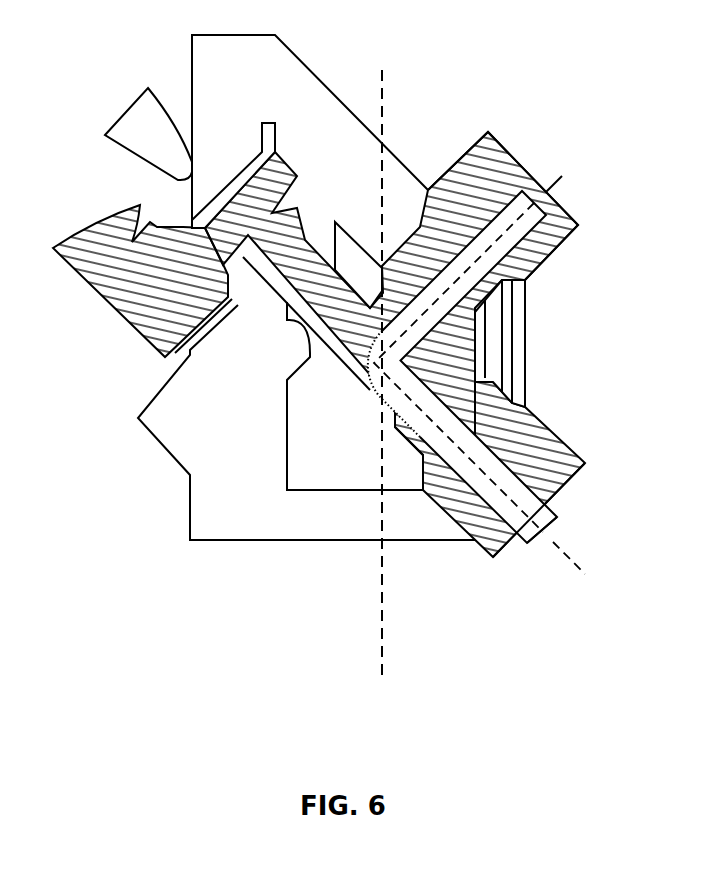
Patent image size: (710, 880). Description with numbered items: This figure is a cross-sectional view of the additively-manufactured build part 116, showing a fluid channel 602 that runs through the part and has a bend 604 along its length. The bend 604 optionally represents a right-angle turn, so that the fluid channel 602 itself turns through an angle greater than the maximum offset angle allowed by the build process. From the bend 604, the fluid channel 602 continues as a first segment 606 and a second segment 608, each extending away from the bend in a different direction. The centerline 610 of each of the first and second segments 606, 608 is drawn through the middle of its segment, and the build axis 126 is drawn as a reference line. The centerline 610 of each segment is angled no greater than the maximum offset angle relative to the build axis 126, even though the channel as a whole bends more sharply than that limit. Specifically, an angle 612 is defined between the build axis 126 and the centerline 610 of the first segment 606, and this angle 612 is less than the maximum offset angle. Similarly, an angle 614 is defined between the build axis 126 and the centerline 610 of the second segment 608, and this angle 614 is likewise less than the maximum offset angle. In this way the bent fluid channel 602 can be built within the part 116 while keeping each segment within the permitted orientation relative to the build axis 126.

The additively-manufactured build part 116 is at (288, 63).
The bend 604 is at (368, 362).
The second segment 608 is at (527, 277).
The fluid channel 602 is at (477, 437).
The first segment 606 is at (513, 482).
The centerline 610 is at (546, 192).
The angle 614 is at (553, 173).
The angle 612 is at (547, 547).
The build axis 126 is at (383, 678).